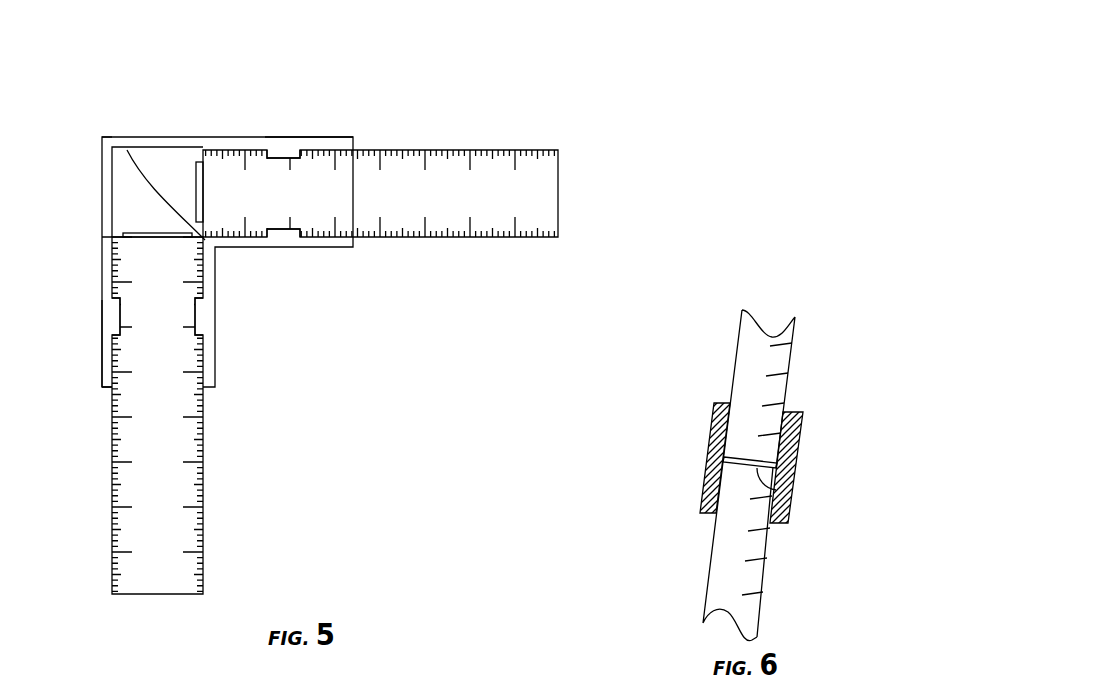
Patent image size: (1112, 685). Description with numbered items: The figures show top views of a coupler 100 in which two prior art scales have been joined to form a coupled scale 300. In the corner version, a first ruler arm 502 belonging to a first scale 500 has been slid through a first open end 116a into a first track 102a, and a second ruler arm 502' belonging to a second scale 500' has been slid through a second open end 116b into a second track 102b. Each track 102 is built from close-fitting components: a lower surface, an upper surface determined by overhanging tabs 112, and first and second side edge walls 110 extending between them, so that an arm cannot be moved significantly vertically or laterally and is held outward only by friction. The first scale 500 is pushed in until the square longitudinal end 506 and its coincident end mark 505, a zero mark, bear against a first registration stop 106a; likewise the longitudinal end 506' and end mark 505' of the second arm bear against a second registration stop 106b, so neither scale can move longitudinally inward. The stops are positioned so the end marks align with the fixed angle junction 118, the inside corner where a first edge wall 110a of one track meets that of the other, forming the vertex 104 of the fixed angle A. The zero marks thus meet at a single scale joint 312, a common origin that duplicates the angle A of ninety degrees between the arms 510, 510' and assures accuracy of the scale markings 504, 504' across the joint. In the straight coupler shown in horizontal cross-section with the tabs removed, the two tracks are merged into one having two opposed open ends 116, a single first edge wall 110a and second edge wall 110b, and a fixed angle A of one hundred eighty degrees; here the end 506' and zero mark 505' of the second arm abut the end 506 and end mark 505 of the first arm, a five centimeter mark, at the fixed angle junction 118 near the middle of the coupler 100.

In FIG. 5, the coupler 100 is at (228, 105).
In FIG. 6, the coupler 100 is at (806, 479).
In FIG. 6, the track 102 is at (801, 410).
In FIG. 5, the first track 102a is at (103, 362).
In FIG. 5, the second track 102b is at (265, 150).
In FIG. 5, the vertex 104 is at (215, 250).
In FIG. 6, the vertex 104 is at (723, 462).
In FIG. 5, the first registration stop 106a is at (103, 134).
In FIG. 5, the second registration stop 106b is at (196, 202).
In FIG. 5, the side edge wall 110 is at (236, 150).
In FIG. 6, the first edge wall 110a is at (803, 453).
In FIG. 6, the second edge wall 110b is at (698, 480).
In FIG. 5, the overhanging tab 112 is at (293, 153).
In FIG. 6, the open end 116 is at (800, 397).
In FIG. 5, the first open end 116a is at (212, 397).
In FIG. 5, the second open end 116b is at (398, 243).
In FIG. 5, the fixed angle junction 118 is at (213, 260).
In FIG. 6, the fixed angle junction 118 is at (723, 460).
In FIG. 5, the coupled scale 300 is at (458, 103).
In FIG. 6, the coupled scale 300 is at (725, 308).
In FIG. 5, the scale joint 312 is at (140, 235).
In FIG. 6, the scale joint 312 is at (738, 455).
In FIG. 5, the first scale 500 is at (141, 453).
In FIG. 6, the first scale 500 is at (776, 353).
In FIG. 5, the second scale 500' is at (427, 193).
In FIG. 6, the second scale 500' is at (773, 551).
In FIG. 5, the first ruler arm 502 is at (266, 475).
In FIG. 6, the first ruler arm 502 is at (791, 301).
In FIG. 5, the second ruler arm 502' is at (571, 109).
In FIG. 6, the second ruler arm 502' is at (659, 590).
In FIG. 5, the scale markings 504 is at (85, 525).
In FIG. 6, the scale markings 504 is at (836, 327).
In FIG. 5, the scale markings 504' is at (575, 148).
In FIG. 6, the scale markings 504' is at (698, 607).
In FIG. 5, the end mark 505 is at (272, 295).
In FIG. 6, the end mark 505 is at (829, 446).
In FIG. 5, the end mark 505' is at (215, 213).
In FIG. 6, the end mark 505' is at (812, 502).
In FIG. 5, the longitudinal end 506 is at (119, 217).
In FIG. 6, the longitudinal end 506 is at (795, 465).
In FIG. 5, the longitudinal end 506' is at (201, 144).
In FIG. 6, the longitudinal end 506' is at (822, 500).
In FIG. 5, the arm of the coupled scale 510 is at (176, 511).
In FIG. 6, the arm of the coupled scale 510 is at (774, 310).
In FIG. 5, the arm of the coupled scale 510' is at (529, 395).
In FIG. 6, the arm of the coupled scale 510' is at (751, 567).
In FIG. 5, the fixed angle A is at (212, 550).
In FIG. 6, the fixed angle A is at (733, 362).